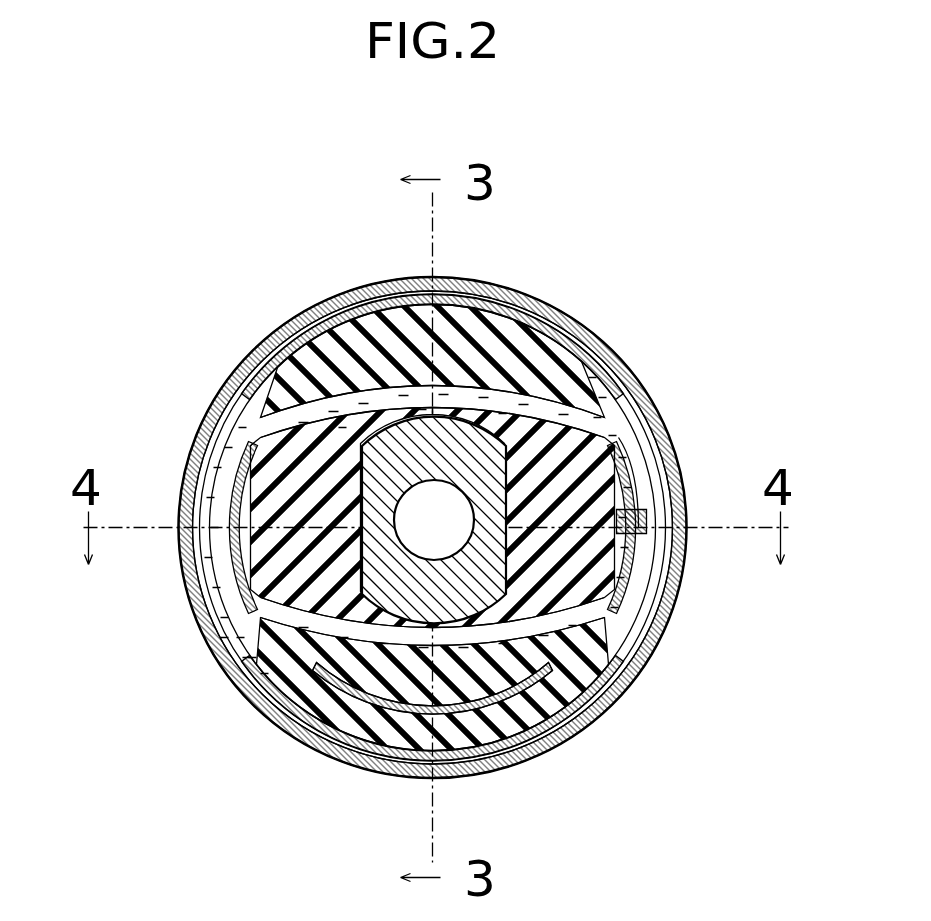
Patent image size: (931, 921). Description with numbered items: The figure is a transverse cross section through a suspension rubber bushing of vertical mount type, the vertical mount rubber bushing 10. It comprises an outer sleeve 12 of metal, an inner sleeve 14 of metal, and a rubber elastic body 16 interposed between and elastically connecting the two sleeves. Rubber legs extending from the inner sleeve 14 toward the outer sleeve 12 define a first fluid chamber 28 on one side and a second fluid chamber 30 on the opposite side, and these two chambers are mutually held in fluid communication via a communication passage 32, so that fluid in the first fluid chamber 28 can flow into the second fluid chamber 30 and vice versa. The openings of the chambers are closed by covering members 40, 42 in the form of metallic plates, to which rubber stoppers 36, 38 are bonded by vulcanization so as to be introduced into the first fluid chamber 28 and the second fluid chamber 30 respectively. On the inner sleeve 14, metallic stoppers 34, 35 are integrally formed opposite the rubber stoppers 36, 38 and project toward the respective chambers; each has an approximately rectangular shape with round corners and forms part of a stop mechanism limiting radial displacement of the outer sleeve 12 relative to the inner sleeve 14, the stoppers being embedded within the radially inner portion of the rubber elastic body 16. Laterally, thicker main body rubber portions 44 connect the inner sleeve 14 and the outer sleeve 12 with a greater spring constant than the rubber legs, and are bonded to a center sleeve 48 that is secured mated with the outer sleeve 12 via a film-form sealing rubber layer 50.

The vertical mount rubber bushing 10 is at (250, 240).
The outer sleeve 12 is at (569, 308).
The inner sleeve 14 is at (516, 520).
The rubber elastic body 16 is at (242, 383).
The first fluid chamber 28 is at (603, 386).
The second fluid chamber 30 is at (250, 650).
The communication passage 32 is at (224, 576).
The metallic stopper 34 is at (563, 374).
The metallic stopper 35 is at (460, 632).
The rubber stopper 36 is at (426, 300).
The rubber stopper 38 is at (370, 707).
The covering member 40 is at (332, 300).
The covering member 42 is at (545, 715).
The main body rubber portion 44 is at (236, 475).
The center sleeve 48 is at (648, 572).
The sealing rubber layer 50 is at (650, 440).